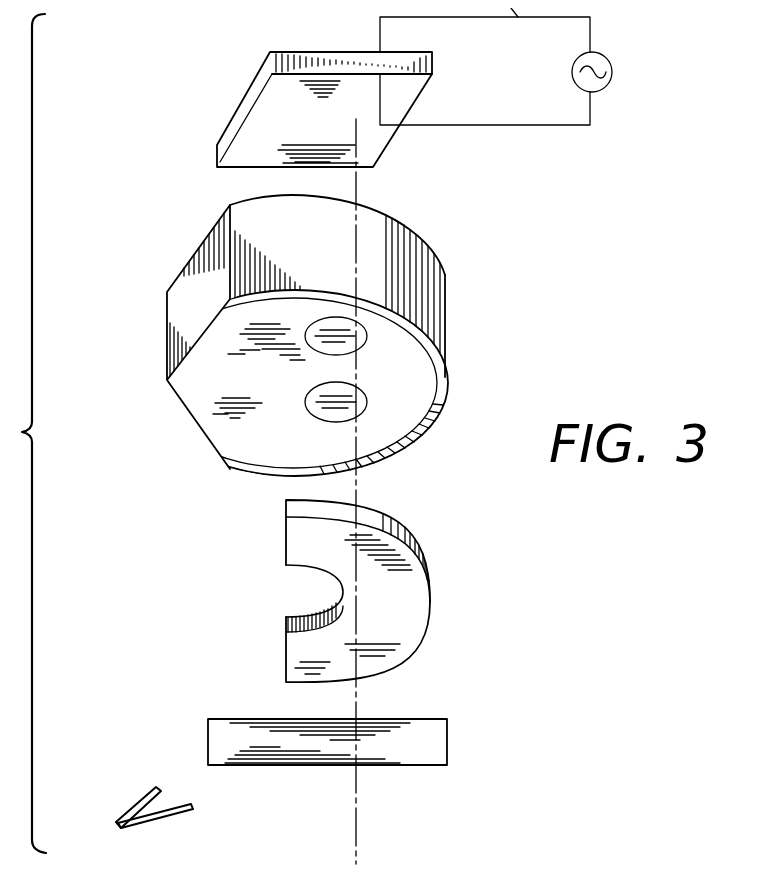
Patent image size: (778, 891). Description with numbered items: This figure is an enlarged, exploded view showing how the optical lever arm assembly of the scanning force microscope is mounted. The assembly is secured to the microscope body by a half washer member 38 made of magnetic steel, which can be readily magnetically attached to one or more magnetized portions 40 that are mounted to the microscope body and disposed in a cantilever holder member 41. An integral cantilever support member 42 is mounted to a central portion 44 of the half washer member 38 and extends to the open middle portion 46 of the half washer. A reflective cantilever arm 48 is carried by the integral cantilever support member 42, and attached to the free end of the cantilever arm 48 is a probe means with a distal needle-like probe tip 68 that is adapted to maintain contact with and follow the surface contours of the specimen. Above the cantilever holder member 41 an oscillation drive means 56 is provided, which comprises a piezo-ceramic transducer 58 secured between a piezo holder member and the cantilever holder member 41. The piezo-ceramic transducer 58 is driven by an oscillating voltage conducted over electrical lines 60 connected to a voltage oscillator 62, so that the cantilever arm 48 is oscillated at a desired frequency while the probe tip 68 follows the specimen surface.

The oscillation drive means 56 is at (440, 152).
The piezo-ceramic transducer 58 is at (255, 91).
The electrical lines 60 is at (578, 124).
The voltage oscillator 62 is at (608, 57).
The cantilever holder member 41 is at (440, 270).
The magnetized portions 40 is at (441, 353).
The half washer member 38 is at (297, 541).
The central portion 44 is at (408, 607).
The open middle portion 46 is at (284, 592).
The integral cantilever support member 42 is at (468, 743).
The probe tip 68 is at (115, 826).
The reflective cantilever arm 48 is at (170, 812).